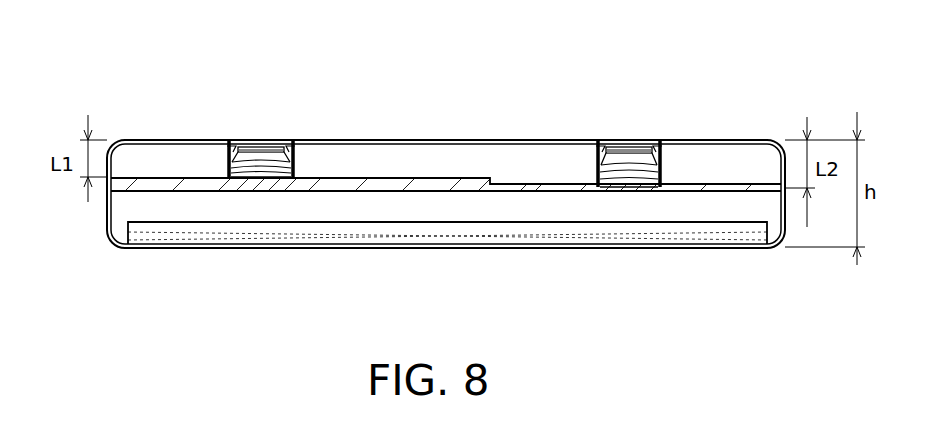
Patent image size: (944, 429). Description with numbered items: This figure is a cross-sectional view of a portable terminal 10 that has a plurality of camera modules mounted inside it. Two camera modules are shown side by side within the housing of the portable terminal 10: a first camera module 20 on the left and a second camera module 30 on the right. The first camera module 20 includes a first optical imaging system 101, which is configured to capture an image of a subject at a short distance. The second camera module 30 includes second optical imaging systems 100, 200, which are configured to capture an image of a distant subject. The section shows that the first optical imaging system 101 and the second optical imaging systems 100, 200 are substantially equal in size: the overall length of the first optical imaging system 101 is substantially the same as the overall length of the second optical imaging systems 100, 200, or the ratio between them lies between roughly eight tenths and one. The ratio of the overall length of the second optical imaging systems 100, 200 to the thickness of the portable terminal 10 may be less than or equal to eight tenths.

The portable terminal 10 is at (729, 140).
The first optical imaging system 101 is at (261, 130).
The first camera module 20 is at (242, 178).
The second optical imaging system 100 is at (629, 130).
The second optical imaging system 200 is at (629, 130).
The second camera module 30 is at (613, 187).